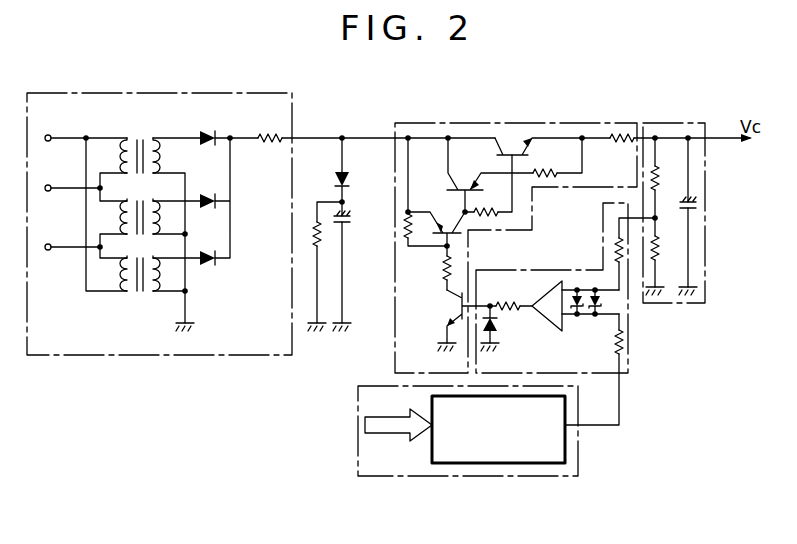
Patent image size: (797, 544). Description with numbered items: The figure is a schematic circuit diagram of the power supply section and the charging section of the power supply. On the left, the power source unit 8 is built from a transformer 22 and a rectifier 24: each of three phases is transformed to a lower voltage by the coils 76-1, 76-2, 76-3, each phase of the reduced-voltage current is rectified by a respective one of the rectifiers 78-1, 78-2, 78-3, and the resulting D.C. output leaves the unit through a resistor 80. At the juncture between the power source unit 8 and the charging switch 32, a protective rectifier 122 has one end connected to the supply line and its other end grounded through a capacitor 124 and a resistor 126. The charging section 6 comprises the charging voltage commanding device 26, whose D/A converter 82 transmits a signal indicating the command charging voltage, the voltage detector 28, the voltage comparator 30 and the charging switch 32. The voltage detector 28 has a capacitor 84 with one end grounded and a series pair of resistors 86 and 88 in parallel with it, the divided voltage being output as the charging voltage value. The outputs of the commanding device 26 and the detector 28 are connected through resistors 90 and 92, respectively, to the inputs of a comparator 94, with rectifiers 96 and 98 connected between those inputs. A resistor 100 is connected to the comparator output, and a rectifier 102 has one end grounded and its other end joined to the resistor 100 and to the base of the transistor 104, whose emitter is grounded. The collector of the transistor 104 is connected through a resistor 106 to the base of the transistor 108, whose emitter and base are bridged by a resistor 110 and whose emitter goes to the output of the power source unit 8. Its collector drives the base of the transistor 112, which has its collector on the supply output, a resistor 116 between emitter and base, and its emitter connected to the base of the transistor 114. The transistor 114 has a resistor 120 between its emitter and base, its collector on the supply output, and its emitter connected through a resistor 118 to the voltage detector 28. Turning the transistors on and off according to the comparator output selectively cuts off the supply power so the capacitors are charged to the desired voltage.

The power source unit 8 is at (257, 92).
The transformer 22 is at (139, 116).
The rectifier 24 is at (210, 116).
The coil 76-1 is at (117, 158).
The coil 76-2 is at (117, 223).
The coil 76-3 is at (138, 295).
The rectifier 78-1 is at (213, 135).
The rectifier 78-2 is at (206, 192).
The rectifier 78-3 is at (205, 262).
The resistor 80 is at (268, 145).
The rectifier 122 is at (347, 177).
The capacitor 124 is at (348, 222).
The resistor 126 is at (312, 223).
The charging switch 32 is at (470, 118).
The resistor 110 is at (406, 230).
The transistor 108 is at (443, 227).
The resistor 106 is at (445, 268).
The transistor 104 is at (454, 306).
The rectifier 102 is at (495, 330).
The transistor 112 is at (465, 177).
The resistor 116 is at (491, 214).
The transistor 114 is at (512, 149).
The resistor 120 is at (546, 175).
The resistor 118 is at (620, 135).
The charging section 6 is at (699, 161).
The voltage detector 28 is at (705, 278).
The resistor 86 is at (660, 187).
The resistor 88 is at (660, 260).
The capacitor 84 is at (698, 204).
The voltage comparator 30 is at (585, 374).
The resistor 100 is at (513, 298).
The comparator 94 is at (548, 322).
The rectifier 96 is at (577, 288).
The rectifier 98 is at (595, 311).
The resistor 92 is at (617, 250).
The resistor 90 is at (626, 337).
The charging voltage commanding device 26 is at (578, 462).
The D/A converter 82 is at (492, 464).